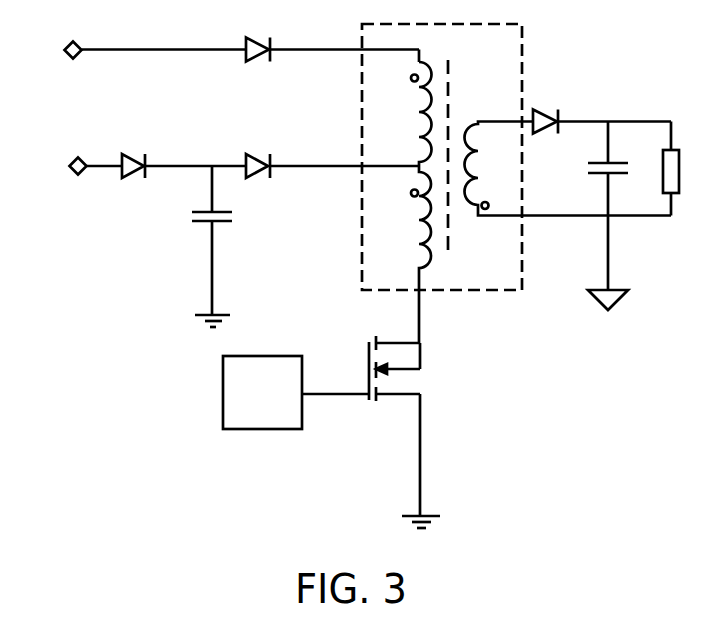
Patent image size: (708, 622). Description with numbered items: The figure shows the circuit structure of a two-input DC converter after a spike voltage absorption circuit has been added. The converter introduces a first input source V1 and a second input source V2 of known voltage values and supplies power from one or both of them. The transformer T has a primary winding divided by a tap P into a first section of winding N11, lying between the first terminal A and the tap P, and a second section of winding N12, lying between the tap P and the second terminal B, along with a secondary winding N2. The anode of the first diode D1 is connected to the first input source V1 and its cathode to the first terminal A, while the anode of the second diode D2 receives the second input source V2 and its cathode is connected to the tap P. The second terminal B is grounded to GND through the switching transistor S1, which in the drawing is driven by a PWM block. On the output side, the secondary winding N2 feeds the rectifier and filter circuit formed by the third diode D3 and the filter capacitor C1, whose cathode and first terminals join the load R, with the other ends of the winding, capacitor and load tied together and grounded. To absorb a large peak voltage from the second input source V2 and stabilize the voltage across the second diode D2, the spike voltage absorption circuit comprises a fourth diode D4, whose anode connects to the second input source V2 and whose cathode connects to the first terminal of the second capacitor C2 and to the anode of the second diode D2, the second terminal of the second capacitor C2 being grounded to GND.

The first input source V1 is at (138, 50).
The second input source V2 is at (76, 166).
The first diode D1 is at (332, 63).
The second diode D2 is at (332, 182).
The third diode D3 is at (601, 105).
The fourth diode D4 is at (184, 154).
The filter capacitor C1 is at (598, 216).
The second capacitor C2 is at (196, 240).
The load R is at (683, 169).
The transformer T is at (442, 157).
The first section of winding N11 is at (400, 114).
The second section of winding N12 is at (398, 254).
The secondary winding N2 is at (567, 169).
The first terminal of the primary winding A is at (378, 44).
The tap P is at (336, 154).
The second terminal of the primary winding B is at (437, 307).
The switching transistor S1 is at (376, 368).
The PWM controller PWM is at (296, 392).
The ground GND is at (295, 423).